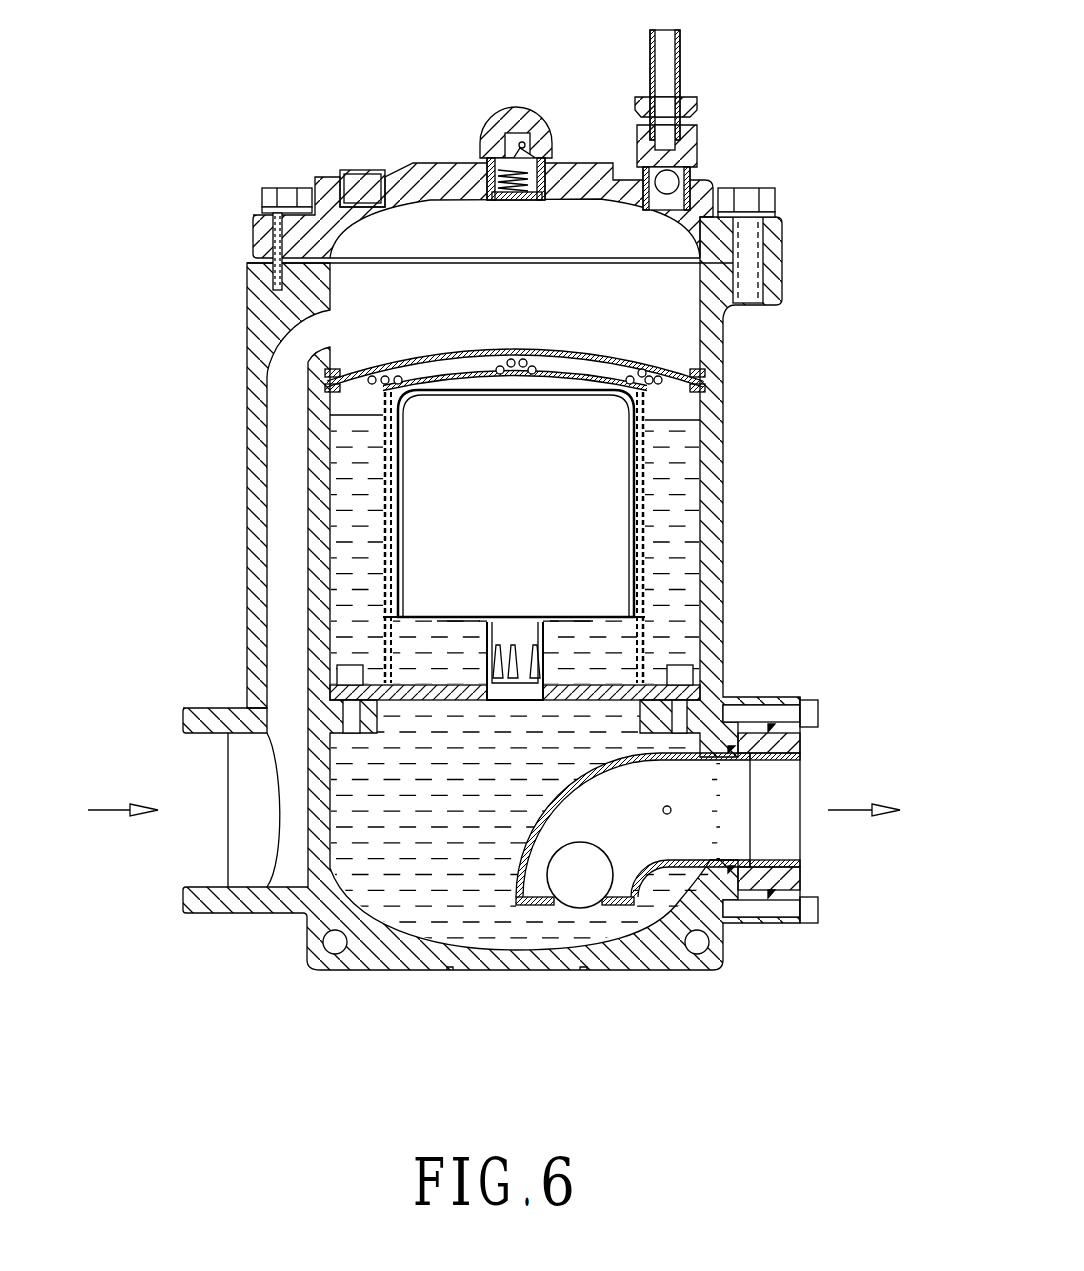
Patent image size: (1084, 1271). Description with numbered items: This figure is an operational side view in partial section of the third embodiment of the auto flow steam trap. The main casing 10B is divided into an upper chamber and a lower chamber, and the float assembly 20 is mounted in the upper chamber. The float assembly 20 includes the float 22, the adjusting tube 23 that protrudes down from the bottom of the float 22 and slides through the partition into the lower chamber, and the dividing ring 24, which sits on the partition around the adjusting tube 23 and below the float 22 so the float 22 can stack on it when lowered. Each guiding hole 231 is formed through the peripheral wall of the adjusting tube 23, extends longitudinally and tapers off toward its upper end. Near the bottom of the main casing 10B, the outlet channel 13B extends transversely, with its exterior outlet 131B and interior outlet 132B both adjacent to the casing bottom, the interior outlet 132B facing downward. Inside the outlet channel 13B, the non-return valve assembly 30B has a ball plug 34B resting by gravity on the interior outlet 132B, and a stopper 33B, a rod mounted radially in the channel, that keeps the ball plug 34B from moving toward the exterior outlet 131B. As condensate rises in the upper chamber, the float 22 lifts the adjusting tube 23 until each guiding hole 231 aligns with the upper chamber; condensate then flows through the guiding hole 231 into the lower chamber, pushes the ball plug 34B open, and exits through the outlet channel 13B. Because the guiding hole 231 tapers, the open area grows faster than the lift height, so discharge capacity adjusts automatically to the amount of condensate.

The main casing 10B is at (260, 345).
The float assembly 20 is at (700, 398).
The float 22 is at (652, 458).
The adjusting tube 23 is at (487, 640).
The guiding hole 231 is at (490, 672).
The dividing ring 24 is at (560, 686).
The non-return valve assembly 30B is at (612, 792).
The exterior outlet 131B is at (752, 758).
The outlet channel 13B is at (752, 857).
The interior outlet 132B is at (557, 893).
The ball plug 34B is at (593, 887).
The stopper 33B is at (668, 815).